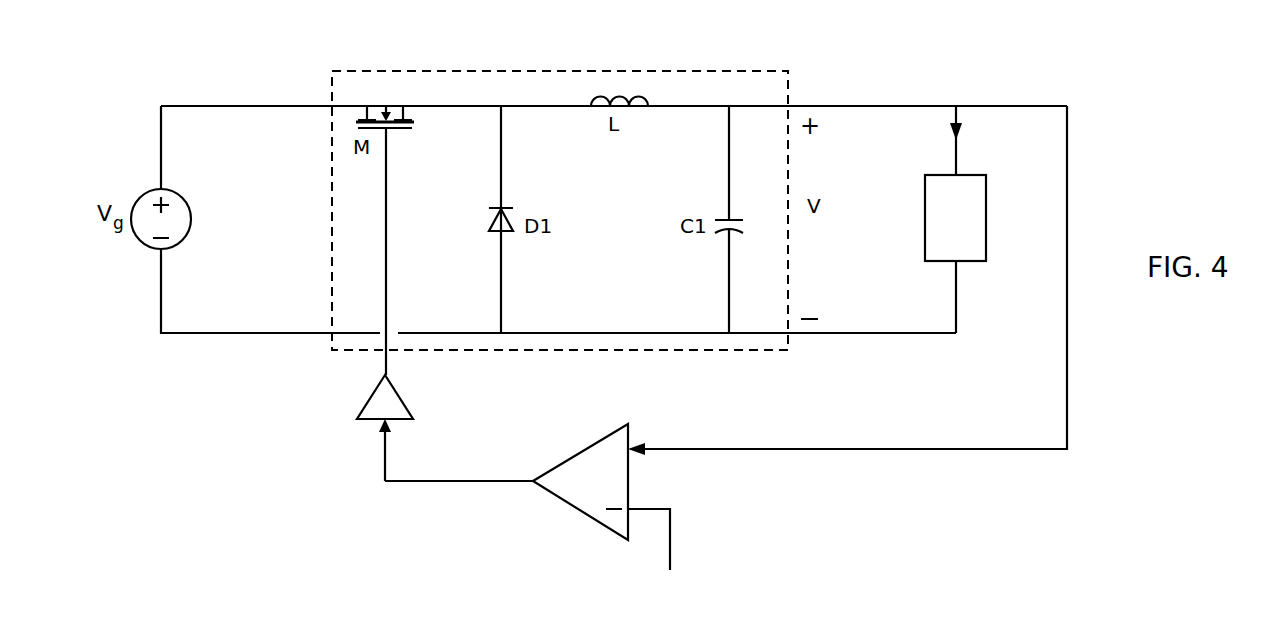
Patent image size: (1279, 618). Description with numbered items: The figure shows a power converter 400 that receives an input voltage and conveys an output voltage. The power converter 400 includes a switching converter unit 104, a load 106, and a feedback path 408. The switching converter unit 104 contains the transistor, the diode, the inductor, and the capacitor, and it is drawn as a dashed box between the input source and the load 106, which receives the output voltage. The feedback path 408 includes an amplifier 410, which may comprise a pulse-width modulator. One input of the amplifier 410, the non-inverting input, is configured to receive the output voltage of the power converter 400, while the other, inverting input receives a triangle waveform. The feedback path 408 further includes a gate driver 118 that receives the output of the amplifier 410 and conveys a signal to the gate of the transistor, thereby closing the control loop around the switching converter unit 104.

The switching converter unit 104 is at (752, 70).
The load 106 is at (968, 175).
The gate driver 118 is at (400, 396).
The amplifier 410 is at (573, 506).
The power converter 400 is at (1197, 102).
The feedback path 408 is at (1033, 515).